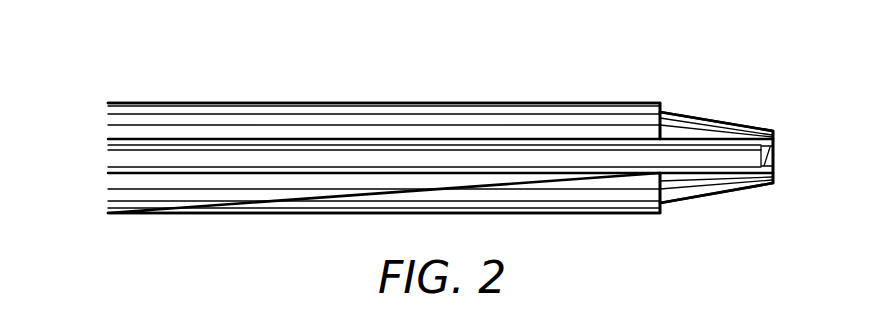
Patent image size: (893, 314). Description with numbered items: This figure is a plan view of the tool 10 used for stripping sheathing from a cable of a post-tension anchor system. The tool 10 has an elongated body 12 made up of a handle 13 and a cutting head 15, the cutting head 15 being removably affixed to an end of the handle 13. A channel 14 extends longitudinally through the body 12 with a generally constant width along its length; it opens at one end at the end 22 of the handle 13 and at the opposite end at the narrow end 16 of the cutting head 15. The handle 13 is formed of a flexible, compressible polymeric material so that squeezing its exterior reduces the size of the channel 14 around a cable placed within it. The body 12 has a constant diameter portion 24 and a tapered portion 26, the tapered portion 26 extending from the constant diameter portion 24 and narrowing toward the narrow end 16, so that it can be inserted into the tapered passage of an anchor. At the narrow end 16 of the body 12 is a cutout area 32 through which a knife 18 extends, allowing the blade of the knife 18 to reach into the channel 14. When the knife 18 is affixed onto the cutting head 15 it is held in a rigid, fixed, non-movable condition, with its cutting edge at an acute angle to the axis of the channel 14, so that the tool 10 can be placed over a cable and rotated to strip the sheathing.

The tool 10 is at (470, 62).
The body 12 is at (323, 108).
The handle 13 is at (217, 102).
The channel 14 is at (115, 158).
The cutting head 15 is at (663, 112).
The narrow end 16 is at (775, 133).
The knife 18 is at (775, 158).
The end of the handle 22 is at (108, 197).
The constant diameter portion 24 is at (523, 107).
The tapered portion 26 is at (713, 115).
The cutout area 32 is at (775, 164).